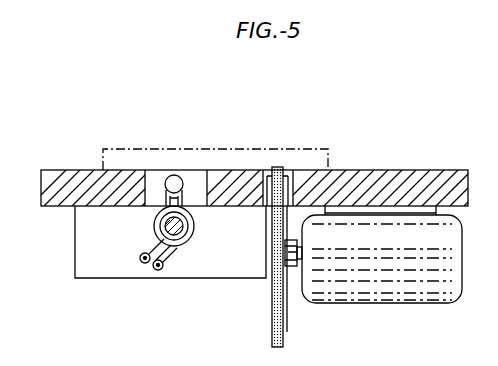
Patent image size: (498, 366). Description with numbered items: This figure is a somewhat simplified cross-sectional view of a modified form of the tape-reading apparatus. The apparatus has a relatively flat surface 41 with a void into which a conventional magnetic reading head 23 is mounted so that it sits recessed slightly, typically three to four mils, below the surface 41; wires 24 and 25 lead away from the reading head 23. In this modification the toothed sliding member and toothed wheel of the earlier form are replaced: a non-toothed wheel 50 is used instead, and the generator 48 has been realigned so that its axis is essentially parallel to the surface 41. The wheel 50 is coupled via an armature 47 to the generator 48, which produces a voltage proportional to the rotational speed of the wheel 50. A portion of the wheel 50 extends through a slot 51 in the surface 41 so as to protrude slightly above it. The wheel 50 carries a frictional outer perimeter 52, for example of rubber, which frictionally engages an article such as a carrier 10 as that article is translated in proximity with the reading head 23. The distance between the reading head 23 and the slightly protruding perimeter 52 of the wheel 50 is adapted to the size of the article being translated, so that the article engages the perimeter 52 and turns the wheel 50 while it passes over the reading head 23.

The carrier 10 is at (167, 141).
The magnetic reading head 23 is at (177, 174).
The wire 24 is at (154, 248).
The wire 25 is at (171, 248).
The flat surface 41 is at (432, 171).
The armature 47 is at (292, 280).
The generator 48 is at (398, 283).
The non-toothed wheel 50 is at (273, 302).
The slot 51 is at (266, 174).
The frictional outer perimeter 52 is at (281, 167).